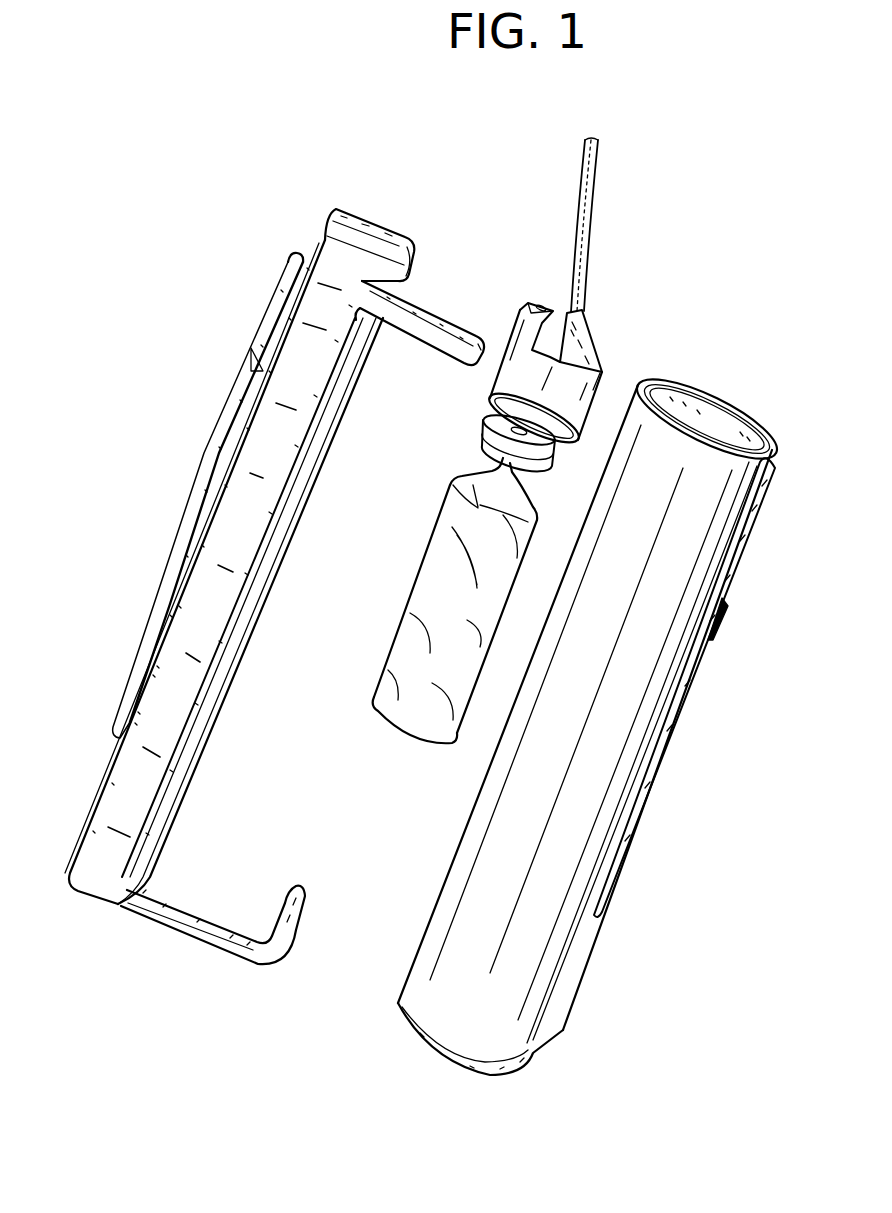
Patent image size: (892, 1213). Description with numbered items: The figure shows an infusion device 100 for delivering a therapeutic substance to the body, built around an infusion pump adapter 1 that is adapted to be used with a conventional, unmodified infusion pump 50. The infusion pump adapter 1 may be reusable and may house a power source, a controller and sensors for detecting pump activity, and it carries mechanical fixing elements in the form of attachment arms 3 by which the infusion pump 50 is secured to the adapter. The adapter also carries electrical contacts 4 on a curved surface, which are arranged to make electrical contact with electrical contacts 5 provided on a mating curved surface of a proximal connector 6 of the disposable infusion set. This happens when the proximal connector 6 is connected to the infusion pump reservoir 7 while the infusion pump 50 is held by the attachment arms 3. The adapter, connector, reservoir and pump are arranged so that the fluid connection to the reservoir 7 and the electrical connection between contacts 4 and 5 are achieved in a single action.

The infusion device 100 is at (647, 212).
The infusion pump adapter 1 is at (117, 797).
The attachment arms 3 is at (428, 323).
The electrical contacts 4 is at (430, 219).
The electrical contacts 5 is at (503, 330).
The proximal connector 6 is at (593, 359).
The infusion pump reservoir 7 is at (425, 608).
The infusion pump 50 is at (614, 766).